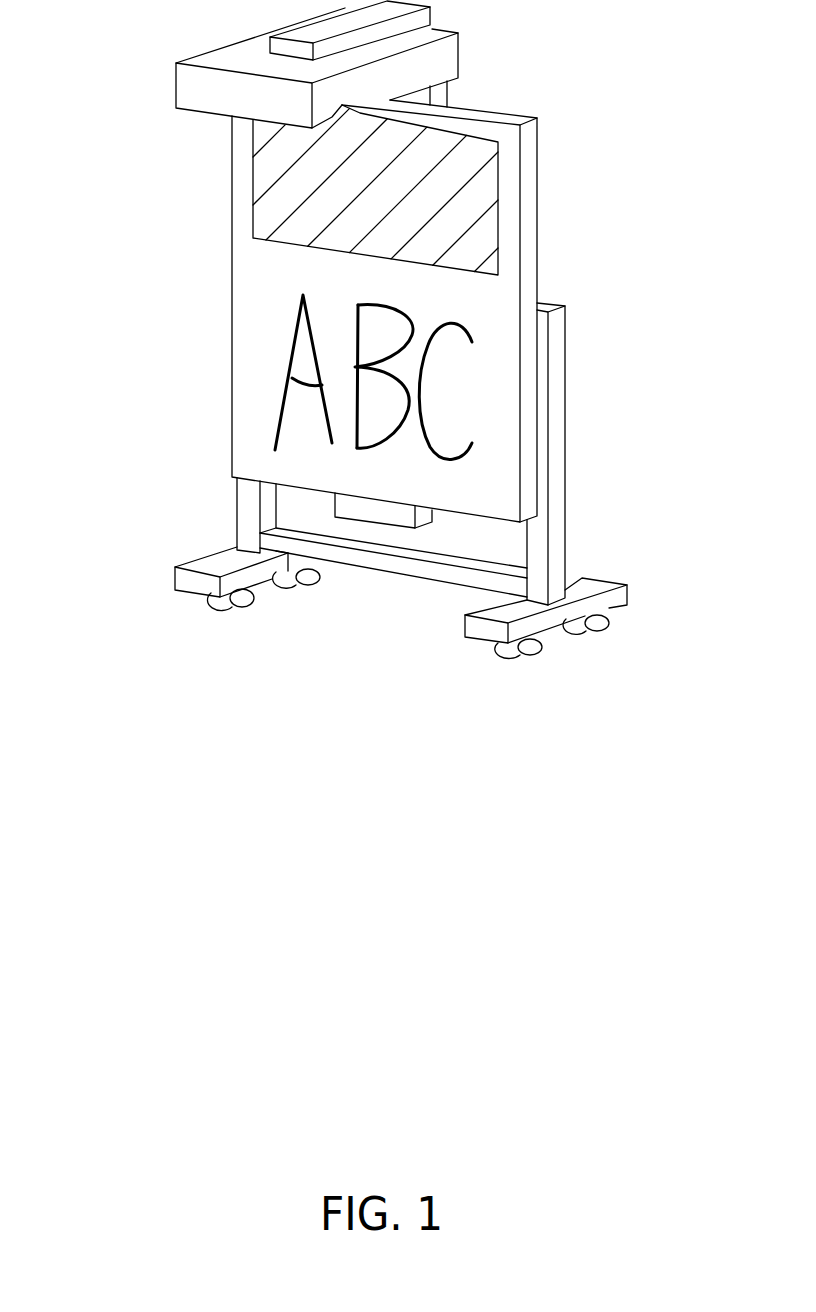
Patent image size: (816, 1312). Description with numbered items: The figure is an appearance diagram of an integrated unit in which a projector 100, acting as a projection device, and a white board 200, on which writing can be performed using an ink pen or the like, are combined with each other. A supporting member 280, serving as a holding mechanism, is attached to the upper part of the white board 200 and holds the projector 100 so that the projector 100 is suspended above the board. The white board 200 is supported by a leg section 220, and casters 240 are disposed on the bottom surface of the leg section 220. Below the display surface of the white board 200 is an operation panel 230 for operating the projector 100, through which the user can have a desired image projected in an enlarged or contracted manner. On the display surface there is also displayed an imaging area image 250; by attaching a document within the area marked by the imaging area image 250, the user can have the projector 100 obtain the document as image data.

The projector 100 is at (175, 83).
The supporting member 280 is at (287, 43).
The white board 200 is at (230, 181).
The imaging area image 250 is at (500, 176).
The operation panel 230 is at (342, 503).
The leg section 220 is at (558, 543).
The casters 240 is at (612, 624).